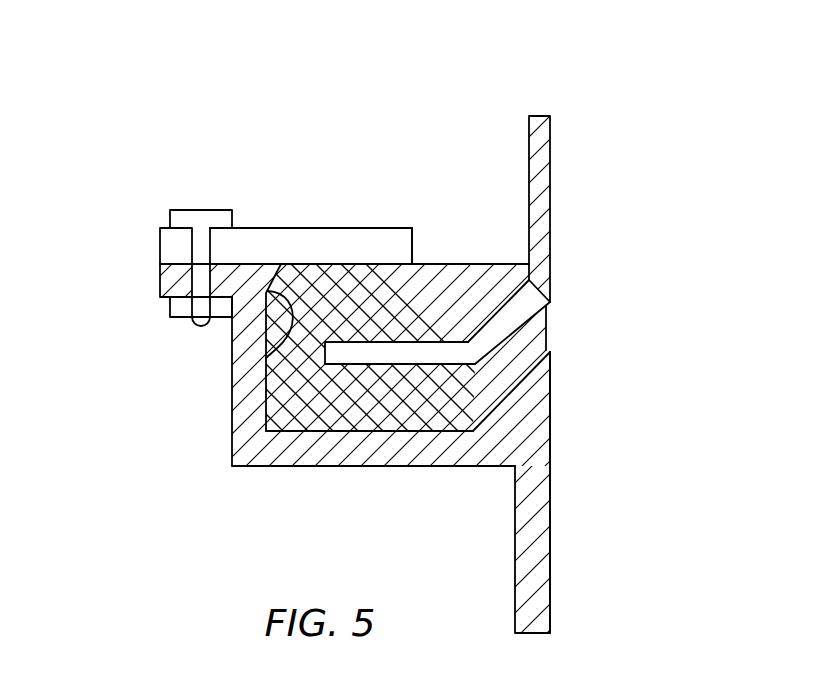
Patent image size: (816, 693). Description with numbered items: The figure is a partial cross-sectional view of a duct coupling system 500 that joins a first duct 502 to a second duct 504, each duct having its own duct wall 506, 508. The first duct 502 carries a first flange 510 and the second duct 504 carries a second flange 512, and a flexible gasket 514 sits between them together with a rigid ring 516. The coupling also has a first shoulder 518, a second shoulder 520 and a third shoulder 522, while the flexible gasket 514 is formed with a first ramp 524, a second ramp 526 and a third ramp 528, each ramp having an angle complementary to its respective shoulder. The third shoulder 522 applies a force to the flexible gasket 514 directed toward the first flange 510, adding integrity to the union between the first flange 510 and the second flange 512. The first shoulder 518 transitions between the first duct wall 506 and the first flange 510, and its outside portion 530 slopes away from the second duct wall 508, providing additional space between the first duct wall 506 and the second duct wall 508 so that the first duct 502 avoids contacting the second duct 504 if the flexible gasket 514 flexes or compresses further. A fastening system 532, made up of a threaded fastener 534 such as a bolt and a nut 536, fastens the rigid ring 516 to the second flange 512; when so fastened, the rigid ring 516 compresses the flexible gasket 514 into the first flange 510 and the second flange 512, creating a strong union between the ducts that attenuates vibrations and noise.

The duct coupling system 500 is at (408, 329).
The first duct 502 is at (593, 357).
The second duct 504 is at (572, 597).
The first duct wall 506 is at (550, 213).
The second duct wall 508 is at (550, 560).
The first flange 510 is at (284, 359).
The second flange 512 is at (425, 467).
The flexible gasket 514 is at (358, 409).
The rigid ring 516 is at (300, 228).
The first shoulder 518 is at (510, 290).
The second shoulder 520 is at (480, 372).
The third shoulder 522 is at (266, 352).
The first ramp 524 is at (462, 254).
The second ramp 526 is at (477, 397).
The third ramp 528 is at (264, 400).
The outside portion of the first shoulder 530 is at (502, 352).
The fastening system 532 is at (157, 183).
The threaded fastener 534 is at (202, 208).
The nut 536 is at (156, 308).